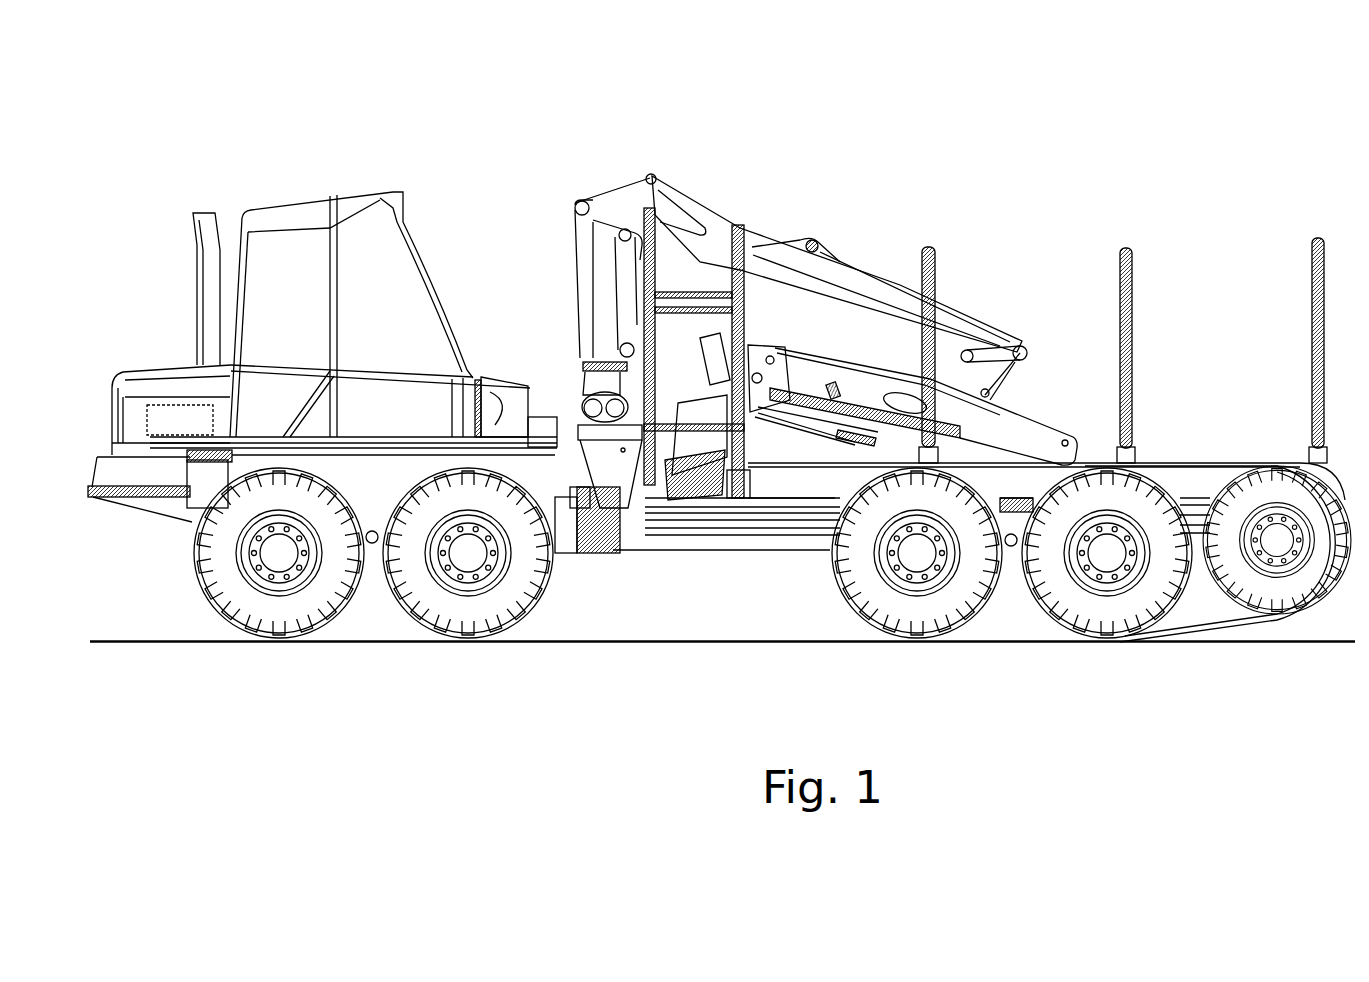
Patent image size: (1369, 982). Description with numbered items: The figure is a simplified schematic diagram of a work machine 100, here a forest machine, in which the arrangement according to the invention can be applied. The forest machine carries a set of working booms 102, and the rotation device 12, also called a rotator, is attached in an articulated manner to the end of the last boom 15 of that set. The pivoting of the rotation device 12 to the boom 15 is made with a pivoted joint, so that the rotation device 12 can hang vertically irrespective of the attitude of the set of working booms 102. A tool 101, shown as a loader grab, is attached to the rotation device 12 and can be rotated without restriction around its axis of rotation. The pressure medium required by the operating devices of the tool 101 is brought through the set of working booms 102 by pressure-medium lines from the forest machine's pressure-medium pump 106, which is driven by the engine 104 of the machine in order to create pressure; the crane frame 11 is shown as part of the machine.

The work machine 100 is at (125, 262).
The tool 101 is at (708, 520).
The set of working booms 102 is at (976, 272).
The engine 104 is at (186, 382).
The pressure-medium pump 106 is at (180, 421).
The crane boom 11 is at (742, 198).
The rotation device 12 is at (672, 370).
The boom 15 is at (858, 392).